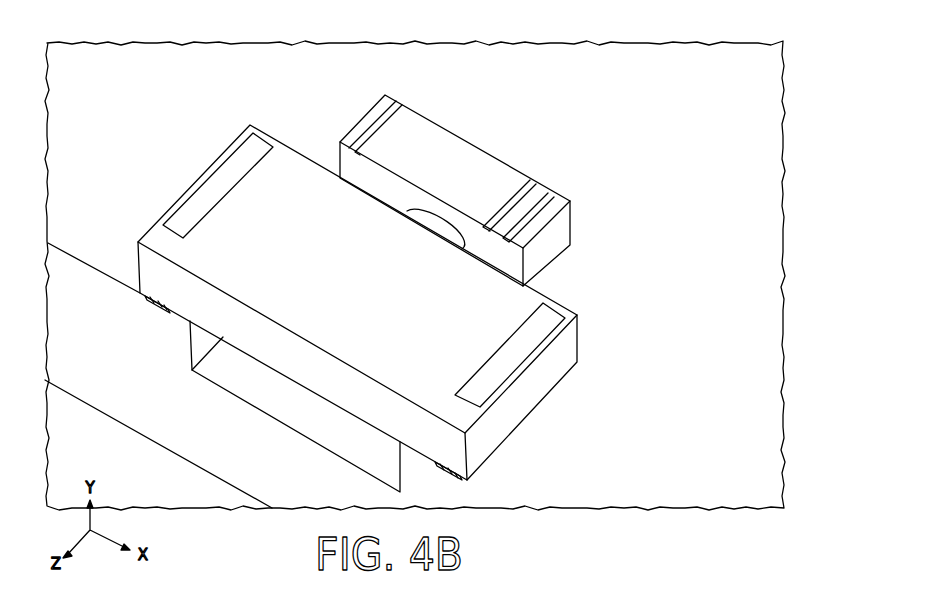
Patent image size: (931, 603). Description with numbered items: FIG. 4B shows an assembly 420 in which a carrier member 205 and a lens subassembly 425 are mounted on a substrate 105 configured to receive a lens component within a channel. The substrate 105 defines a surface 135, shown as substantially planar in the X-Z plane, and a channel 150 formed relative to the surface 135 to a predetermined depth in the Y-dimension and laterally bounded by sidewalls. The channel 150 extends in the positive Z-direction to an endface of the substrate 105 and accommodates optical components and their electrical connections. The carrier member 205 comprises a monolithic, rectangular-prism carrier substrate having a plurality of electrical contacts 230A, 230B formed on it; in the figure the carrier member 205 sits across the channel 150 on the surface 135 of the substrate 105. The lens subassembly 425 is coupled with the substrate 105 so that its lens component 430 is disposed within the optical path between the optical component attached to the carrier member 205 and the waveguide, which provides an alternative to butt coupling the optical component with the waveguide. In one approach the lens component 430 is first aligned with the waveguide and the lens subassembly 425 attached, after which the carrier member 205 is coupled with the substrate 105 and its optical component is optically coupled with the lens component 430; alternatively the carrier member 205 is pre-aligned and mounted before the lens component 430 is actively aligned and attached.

The housing 420 is at (627, 95).
The surface 135 is at (683, 273).
The substrate 105 is at (112, 405).
The channel 150 is at (283, 392).
The carrier member 205 is at (372, 302).
The electrical contact 230A is at (190, 217).
The electrical contact 230B is at (475, 385).
The lens subassembly 425 is at (455, 190).
The lens component 430 is at (432, 223).